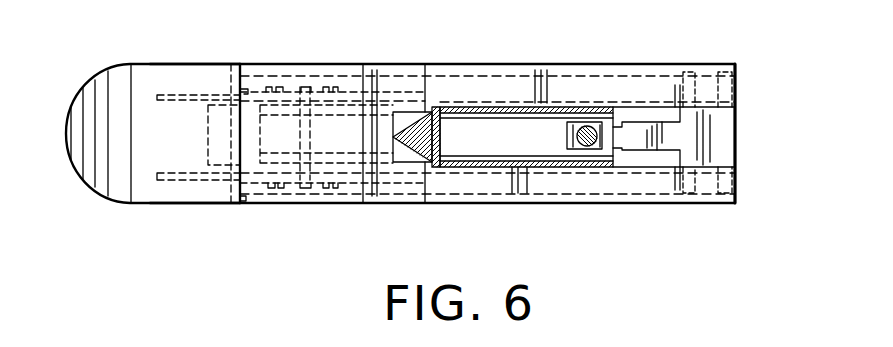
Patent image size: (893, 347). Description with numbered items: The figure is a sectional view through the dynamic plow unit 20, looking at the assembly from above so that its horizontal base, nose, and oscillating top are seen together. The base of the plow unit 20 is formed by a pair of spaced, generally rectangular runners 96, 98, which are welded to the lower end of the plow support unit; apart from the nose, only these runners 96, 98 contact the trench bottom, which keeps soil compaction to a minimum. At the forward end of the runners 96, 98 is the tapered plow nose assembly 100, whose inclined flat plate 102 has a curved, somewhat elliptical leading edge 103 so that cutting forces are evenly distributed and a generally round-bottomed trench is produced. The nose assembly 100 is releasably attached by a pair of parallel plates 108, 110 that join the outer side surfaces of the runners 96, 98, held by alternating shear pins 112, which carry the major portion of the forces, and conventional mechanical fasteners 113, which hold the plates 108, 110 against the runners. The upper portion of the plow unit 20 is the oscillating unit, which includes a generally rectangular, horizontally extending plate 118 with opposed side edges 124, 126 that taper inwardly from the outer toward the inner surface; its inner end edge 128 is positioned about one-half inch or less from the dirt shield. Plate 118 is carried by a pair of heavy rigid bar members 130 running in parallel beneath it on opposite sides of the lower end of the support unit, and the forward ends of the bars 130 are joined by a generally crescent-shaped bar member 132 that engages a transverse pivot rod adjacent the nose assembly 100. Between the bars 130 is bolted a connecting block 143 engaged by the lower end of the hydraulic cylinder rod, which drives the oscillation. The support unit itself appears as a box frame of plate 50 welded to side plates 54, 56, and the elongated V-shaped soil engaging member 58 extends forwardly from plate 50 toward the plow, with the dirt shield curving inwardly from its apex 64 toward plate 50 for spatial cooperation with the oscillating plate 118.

The dynamic plow unit 20 is at (738, 92).
The plow nose assembly 100 is at (112, 62).
The inclined flat plate 102 is at (158, 190).
The leading edge 103 is at (88, 181).
The plate 108 is at (193, 180).
The plate 110 is at (176, 92).
The shear pins 112 is at (300, 83).
The mechanical fasteners 113 is at (330, 183).
The plate 118 is at (315, 89).
The side edge 124 is at (363, 204).
The side edge 126 is at (350, 64).
The inner end edge 128 is at (430, 78).
The crescent-shaped bar member 132 is at (208, 122).
The soil engaging member 58 is at (415, 111).
The apex 64 is at (393, 137).
The runner 98 is at (493, 97).
The runner 96 is at (457, 177).
The side plate 56 is at (523, 110).
The side plate 54 is at (545, 165).
The plate 50 is at (443, 133).
The connecting block 143 is at (638, 130).
The bar members 130 is at (597, 64).